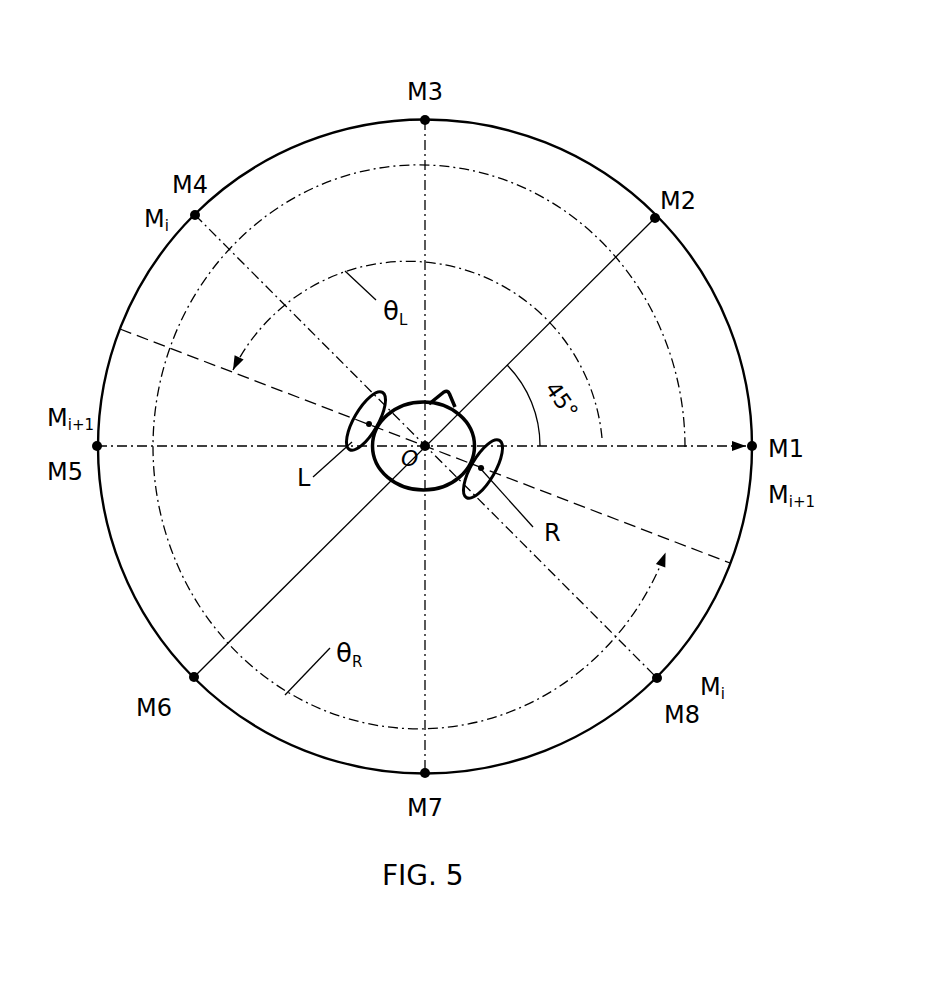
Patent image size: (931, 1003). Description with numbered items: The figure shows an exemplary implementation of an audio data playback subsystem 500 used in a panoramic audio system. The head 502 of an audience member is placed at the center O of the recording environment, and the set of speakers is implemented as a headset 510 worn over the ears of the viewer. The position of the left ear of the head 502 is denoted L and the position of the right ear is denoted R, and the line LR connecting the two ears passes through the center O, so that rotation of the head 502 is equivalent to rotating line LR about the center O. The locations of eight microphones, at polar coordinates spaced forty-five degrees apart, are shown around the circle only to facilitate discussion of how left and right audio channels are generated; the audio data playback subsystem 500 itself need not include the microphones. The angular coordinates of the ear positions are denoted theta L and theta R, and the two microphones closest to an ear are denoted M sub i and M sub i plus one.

The audio data playback subsystem 500 is at (442, 34).
The head 502 is at (433, 490).
The headset 510 is at (468, 495).